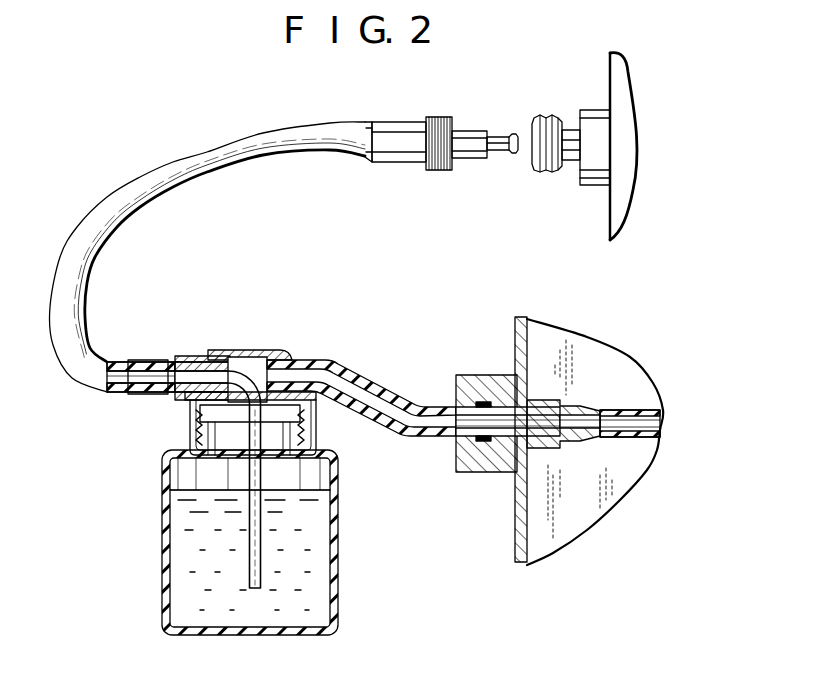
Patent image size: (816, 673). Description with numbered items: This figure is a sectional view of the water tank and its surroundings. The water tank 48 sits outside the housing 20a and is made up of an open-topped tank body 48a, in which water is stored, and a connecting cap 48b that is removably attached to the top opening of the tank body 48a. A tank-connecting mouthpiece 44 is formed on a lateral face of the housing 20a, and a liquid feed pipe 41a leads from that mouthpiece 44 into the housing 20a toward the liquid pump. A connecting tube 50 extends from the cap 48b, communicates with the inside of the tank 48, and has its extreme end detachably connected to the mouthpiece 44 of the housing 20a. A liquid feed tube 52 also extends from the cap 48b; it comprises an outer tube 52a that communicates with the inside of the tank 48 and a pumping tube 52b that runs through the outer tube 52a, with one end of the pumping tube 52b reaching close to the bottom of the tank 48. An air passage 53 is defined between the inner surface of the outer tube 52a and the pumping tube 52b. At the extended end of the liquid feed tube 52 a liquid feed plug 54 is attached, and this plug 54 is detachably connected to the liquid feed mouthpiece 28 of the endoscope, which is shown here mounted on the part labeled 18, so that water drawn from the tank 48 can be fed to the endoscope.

The panel / wall with fitting 18 is at (617, 87).
The liquid feed mouthpiece 28 is at (554, 174).
The liquid feed plug 54 is at (398, 130).
The liquid feed tube 52 is at (194, 187).
The outer tube 52a is at (117, 393).
The pumping tube 52b is at (178, 359).
The air passage 53 is at (128, 361).
The connecting cap 48b is at (253, 351).
The water tank 48 is at (135, 495).
The tank body 48a is at (163, 592).
The connecting tube 50 is at (376, 380).
The tank-connecting mouthpiece 44 is at (478, 374).
The liquid feed pipe 41a is at (624, 410).
The housing 20a is at (565, 540).